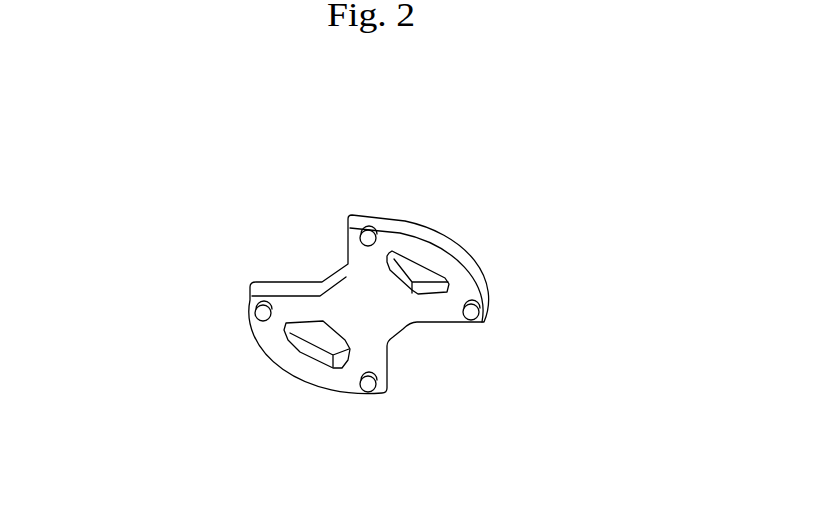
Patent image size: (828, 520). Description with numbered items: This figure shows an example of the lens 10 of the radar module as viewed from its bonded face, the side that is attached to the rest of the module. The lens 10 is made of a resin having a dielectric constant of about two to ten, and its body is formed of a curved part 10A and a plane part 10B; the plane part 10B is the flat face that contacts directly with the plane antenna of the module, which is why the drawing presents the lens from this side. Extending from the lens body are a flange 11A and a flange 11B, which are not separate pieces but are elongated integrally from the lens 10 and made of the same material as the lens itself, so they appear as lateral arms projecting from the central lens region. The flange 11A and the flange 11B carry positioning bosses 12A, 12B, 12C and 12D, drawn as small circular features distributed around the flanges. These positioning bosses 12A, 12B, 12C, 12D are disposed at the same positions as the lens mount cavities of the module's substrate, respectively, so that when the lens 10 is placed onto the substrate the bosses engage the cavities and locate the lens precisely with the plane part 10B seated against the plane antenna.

The lens 10 is at (215, 110).
The curved part 10A is at (345, 267).
The plane part 10B is at (377, 317).
The flange 11A is at (427, 245).
The flange 11B is at (297, 358).
The positioning boss 12A is at (476, 311).
The positioning boss 12B is at (368, 240).
The positioning boss 12C is at (262, 316).
The positioning boss 12D is at (369, 390).